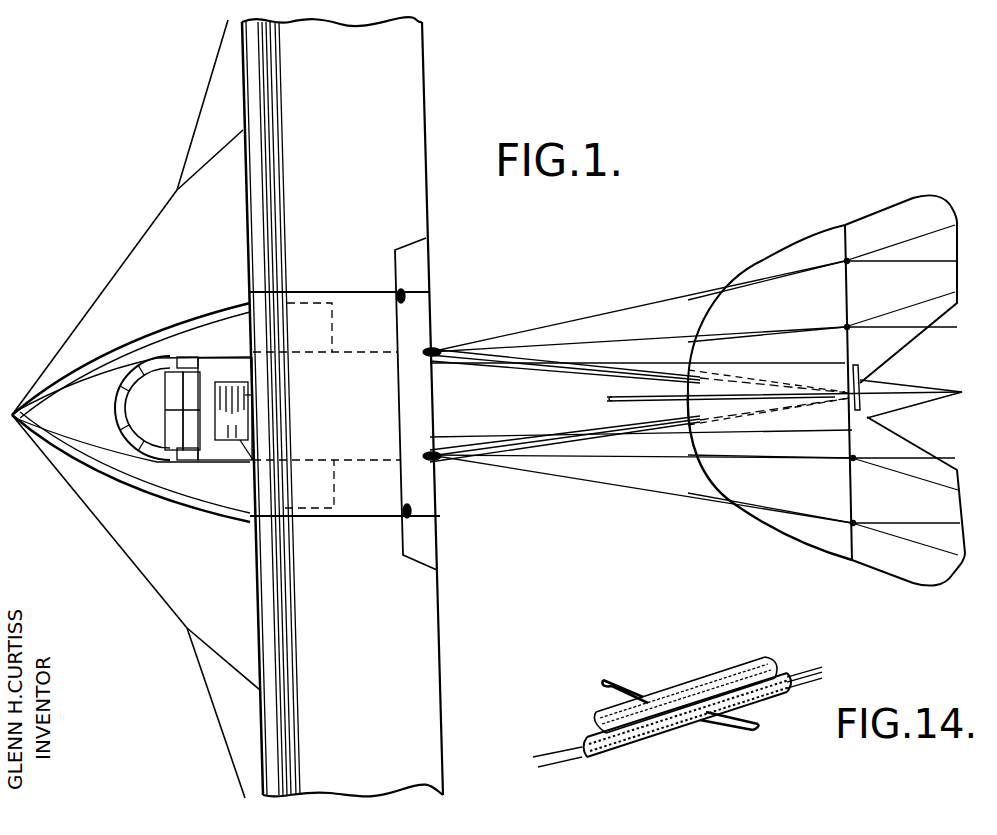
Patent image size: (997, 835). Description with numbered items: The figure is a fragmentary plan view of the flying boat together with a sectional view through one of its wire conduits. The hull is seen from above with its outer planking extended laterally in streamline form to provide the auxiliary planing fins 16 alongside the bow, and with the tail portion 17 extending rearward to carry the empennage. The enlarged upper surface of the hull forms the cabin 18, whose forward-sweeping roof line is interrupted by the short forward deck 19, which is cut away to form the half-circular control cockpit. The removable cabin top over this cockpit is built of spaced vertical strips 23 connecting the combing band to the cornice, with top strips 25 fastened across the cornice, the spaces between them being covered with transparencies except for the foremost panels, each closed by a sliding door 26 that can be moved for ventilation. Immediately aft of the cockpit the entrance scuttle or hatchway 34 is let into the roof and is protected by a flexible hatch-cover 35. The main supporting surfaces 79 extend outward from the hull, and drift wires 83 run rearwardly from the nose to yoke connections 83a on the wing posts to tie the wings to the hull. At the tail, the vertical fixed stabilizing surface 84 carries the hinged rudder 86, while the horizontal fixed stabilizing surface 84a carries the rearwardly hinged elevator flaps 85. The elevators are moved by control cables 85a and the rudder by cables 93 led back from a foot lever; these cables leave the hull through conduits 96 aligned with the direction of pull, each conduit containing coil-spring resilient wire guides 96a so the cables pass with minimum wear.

In FIG. 1, the auxiliary planing fins 16 is at (131, 412).
In FIG. 1, the tail portion 17 is at (787, 385).
In FIG. 1, the cabin 18 is at (225, 407).
In FIG. 1, the forward deck 19 is at (131, 409).
In FIG. 1, the vertical strips 23 is at (152, 455).
In FIG. 1, the top strips 25 is at (166, 403).
In FIG. 1, the sliding door 26 is at (178, 418).
In FIG. 1, the entrance scuttle or hatchway 34 is at (245, 445).
In FIG. 1, the hatch-cover 35 is at (242, 402).
In FIG. 1, the main supporting surfaces 79 is at (342, 406).
In FIG. 1, the drift wires 83 is at (82, 316).
In FIG. 1, the yoke connections 83a is at (221, 154).
In FIG. 1, the vertical fixed stabilizing surface 84 is at (805, 403).
In FIG. 1, the horizontal fixed stabilizing surface 84a is at (770, 392).
In FIG. 1, the elevator flaps 85 is at (905, 390).
In FIG. 1, the control cables 85a is at (667, 342).
In FIG. 14, the control cables 85a is at (807, 673).
In FIG. 1, the rudder 86 is at (915, 393).
In FIG. 1, the cables 93 is at (630, 360).
In FIG. 14, the cables 93 is at (802, 688).
In FIG. 1, the conduits 96 is at (430, 352).
In FIG. 14, the conduits 96 is at (665, 695).
In FIG. 14, the resilient wire guides 96a is at (762, 662).